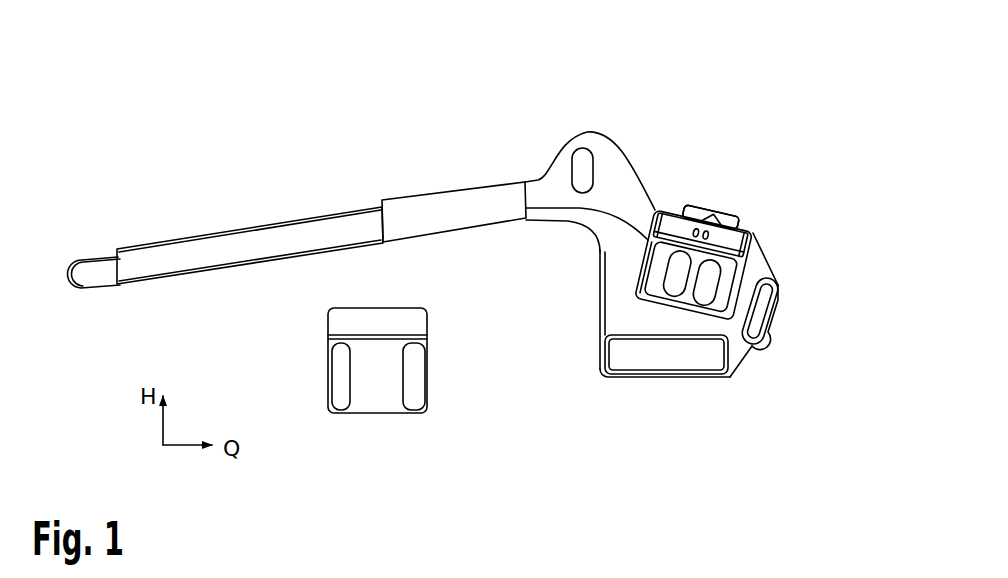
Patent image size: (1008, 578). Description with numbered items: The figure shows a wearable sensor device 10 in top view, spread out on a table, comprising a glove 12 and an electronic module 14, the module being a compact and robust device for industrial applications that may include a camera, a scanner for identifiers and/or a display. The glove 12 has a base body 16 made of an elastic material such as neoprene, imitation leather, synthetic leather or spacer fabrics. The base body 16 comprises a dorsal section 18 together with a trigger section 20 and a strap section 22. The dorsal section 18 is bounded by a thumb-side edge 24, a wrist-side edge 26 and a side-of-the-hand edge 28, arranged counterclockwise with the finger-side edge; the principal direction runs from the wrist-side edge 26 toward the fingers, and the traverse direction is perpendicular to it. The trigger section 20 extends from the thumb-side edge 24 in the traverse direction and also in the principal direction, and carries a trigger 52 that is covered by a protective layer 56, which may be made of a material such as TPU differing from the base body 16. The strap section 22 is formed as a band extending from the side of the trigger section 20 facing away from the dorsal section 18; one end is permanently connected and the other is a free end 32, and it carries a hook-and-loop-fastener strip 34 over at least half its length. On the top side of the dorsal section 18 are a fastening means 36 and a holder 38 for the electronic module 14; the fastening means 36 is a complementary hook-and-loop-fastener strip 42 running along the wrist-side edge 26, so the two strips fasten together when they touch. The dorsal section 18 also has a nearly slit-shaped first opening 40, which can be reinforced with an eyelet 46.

The wearable sensor device 10 is at (140, 103).
The glove 12 is at (715, 80).
The electronic module 14 is at (375, 397).
The base body 16 is at (600, 321).
The dorsal section 18 is at (760, 263).
The trigger section 20 is at (541, 178).
The strap section 22 is at (412, 218).
The thumb-side edge 24 is at (594, 279).
The wrist-side edge 26 is at (683, 386).
The side-of-the-hand edge 28 is at (793, 306).
The free end 32 is at (62, 258).
The hook-and-loop-fastener strip 34 is at (208, 248).
The fastening means 36 is at (666, 354).
The holder 38 is at (677, 218).
The first opening 40 is at (757, 322).
The hook-and-loop-fastener strip 42 is at (630, 365).
The eyelet 46 is at (745, 365).
The trigger 52 is at (582, 158).
The protective layer 56 is at (607, 182).